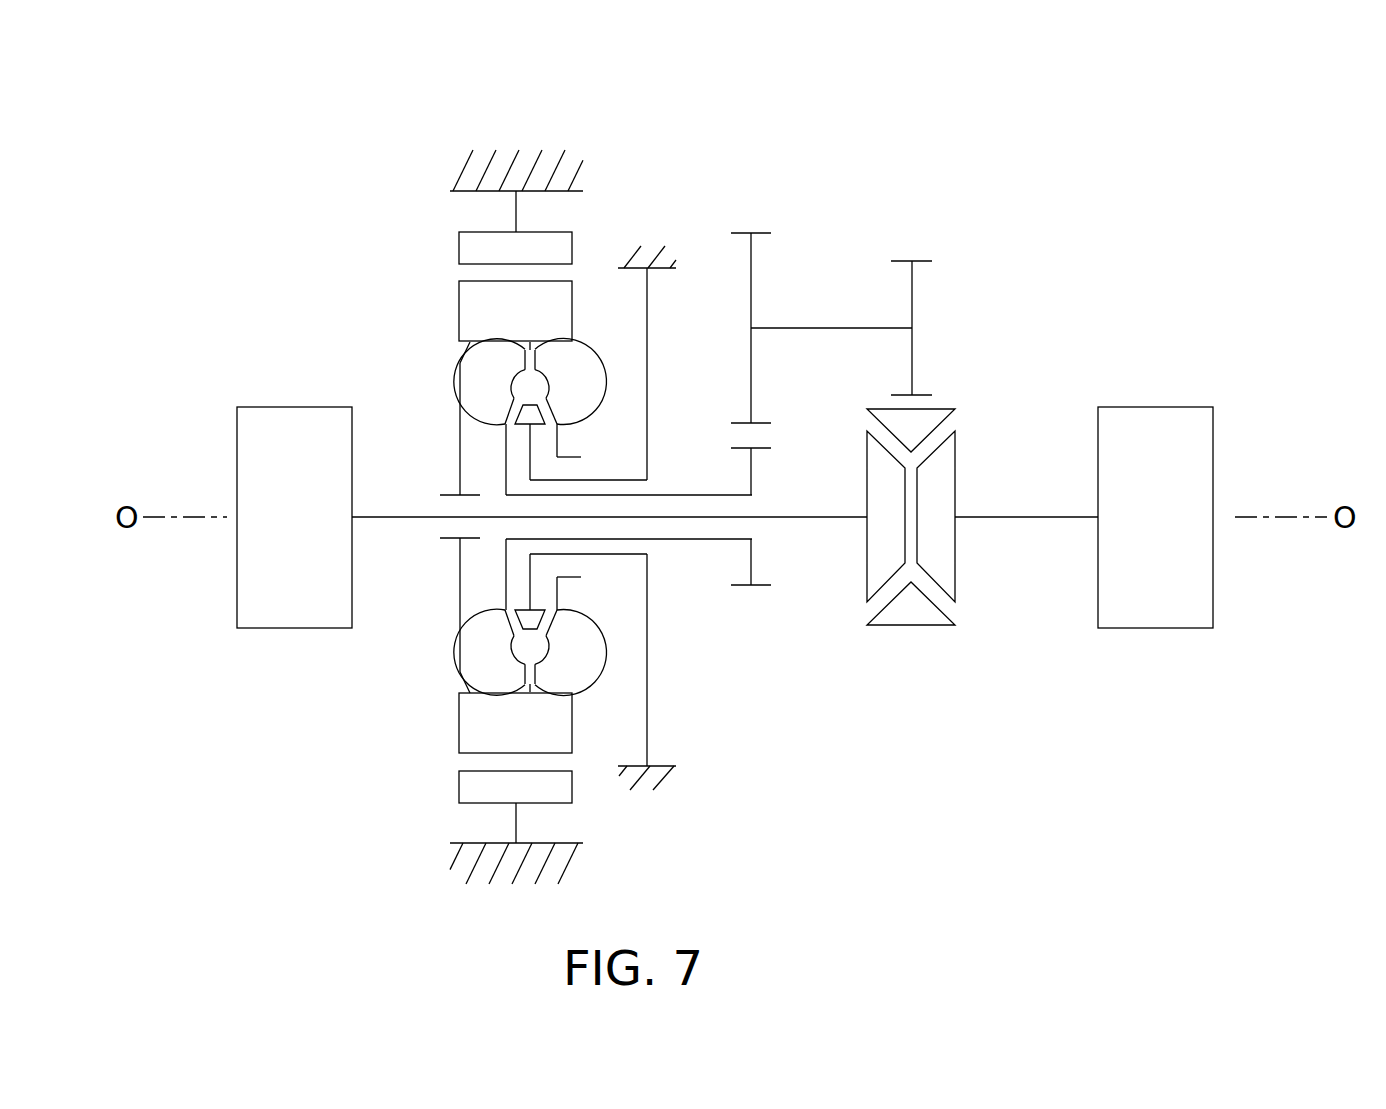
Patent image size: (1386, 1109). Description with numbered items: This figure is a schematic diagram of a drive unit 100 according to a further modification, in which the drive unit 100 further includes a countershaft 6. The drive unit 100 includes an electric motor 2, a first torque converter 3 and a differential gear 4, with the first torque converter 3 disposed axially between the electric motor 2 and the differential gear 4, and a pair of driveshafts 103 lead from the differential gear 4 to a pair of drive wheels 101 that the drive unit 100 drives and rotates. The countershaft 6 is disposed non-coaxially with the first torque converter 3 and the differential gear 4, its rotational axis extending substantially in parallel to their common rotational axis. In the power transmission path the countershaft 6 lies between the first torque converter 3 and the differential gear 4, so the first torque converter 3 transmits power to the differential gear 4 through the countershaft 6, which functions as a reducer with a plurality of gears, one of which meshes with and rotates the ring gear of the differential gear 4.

The drive unit 100 is at (728, 474).
The electric motor 2 is at (445, 255).
The first torque converter 3 is at (590, 360).
The differential gear 4 is at (968, 417).
The countershaft 6 is at (827, 313).
The drive wheels 101 is at (272, 628).
The driveshafts 103 is at (393, 518).